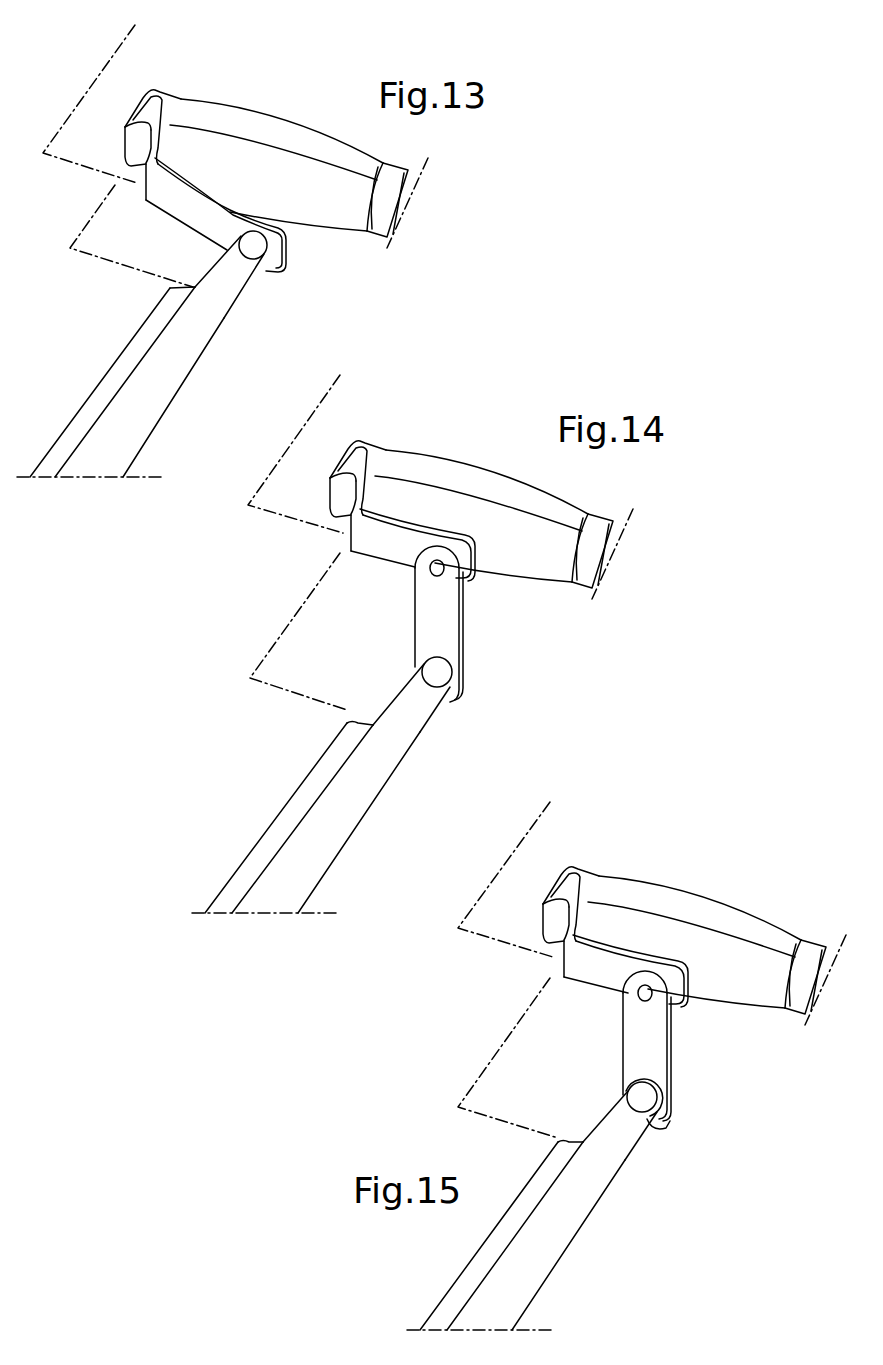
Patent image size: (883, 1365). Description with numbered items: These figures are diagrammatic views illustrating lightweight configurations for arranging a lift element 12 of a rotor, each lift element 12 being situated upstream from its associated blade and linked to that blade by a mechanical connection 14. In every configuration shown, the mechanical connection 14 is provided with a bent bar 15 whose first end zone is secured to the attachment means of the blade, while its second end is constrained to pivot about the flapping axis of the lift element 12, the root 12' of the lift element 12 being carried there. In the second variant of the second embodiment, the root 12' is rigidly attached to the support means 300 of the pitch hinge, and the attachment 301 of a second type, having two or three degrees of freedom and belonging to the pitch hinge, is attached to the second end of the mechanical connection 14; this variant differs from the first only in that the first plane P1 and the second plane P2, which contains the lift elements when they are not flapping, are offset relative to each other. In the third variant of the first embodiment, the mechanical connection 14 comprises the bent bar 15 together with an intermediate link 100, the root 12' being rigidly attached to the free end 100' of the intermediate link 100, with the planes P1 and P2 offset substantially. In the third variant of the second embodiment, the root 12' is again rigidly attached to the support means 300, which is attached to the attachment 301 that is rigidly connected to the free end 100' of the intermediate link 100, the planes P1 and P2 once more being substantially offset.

In FIG. 13, the lift element 12 is at (127, 382).
In FIG. 14, the lift element 12 is at (306, 818).
In FIG. 15, the lift element 12 is at (516, 1236).
In FIG. 13, the root 12' is at (255, 279).
In FIG. 14, the root 12' is at (432, 708).
In FIG. 15, the root 12' is at (597, 1121).
In FIG. 13, the mechanical connection 14 is at (158, 218).
In FIG. 14, the mechanical connection 14 is at (355, 560).
In FIG. 15, the mechanical connection 14 is at (619, 940).
In FIG. 14, the bent bar 15 is at (387, 513).
In FIG. 14, the intermediate link 100 is at (477, 624).
In FIG. 15, the intermediate link 100 is at (686, 1046).
In FIG. 14, the free end 100' is at (365, 632).
In FIG. 15, the free end 100' is at (577, 1053).
In FIG. 15, the support means 300 is at (662, 1123).
In FIG. 15, the attachment 301 is at (665, 1100).
In FIG. 13, the first plane P1 is at (122, 44).
In FIG. 14, the first plane P1 is at (328, 397).
In FIG. 15, the first plane P1 is at (540, 818).
In FIG. 13, the second plane P2 is at (80, 250).
In FIG. 14, the second plane P2 is at (257, 682).
In FIG. 15, the second plane P2 is at (460, 933).